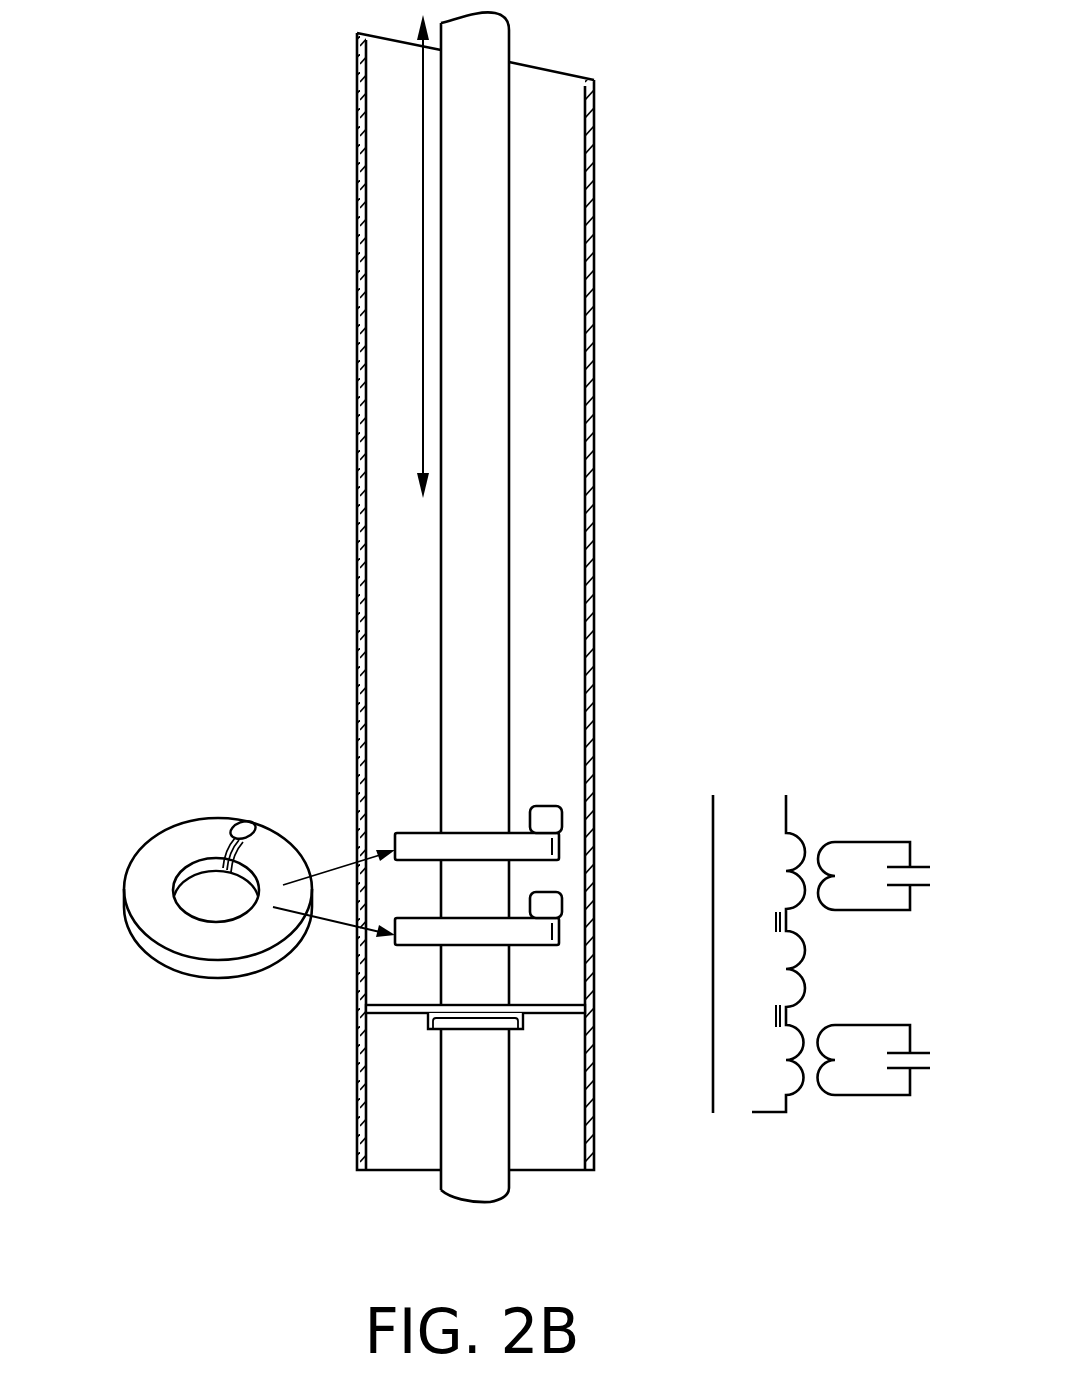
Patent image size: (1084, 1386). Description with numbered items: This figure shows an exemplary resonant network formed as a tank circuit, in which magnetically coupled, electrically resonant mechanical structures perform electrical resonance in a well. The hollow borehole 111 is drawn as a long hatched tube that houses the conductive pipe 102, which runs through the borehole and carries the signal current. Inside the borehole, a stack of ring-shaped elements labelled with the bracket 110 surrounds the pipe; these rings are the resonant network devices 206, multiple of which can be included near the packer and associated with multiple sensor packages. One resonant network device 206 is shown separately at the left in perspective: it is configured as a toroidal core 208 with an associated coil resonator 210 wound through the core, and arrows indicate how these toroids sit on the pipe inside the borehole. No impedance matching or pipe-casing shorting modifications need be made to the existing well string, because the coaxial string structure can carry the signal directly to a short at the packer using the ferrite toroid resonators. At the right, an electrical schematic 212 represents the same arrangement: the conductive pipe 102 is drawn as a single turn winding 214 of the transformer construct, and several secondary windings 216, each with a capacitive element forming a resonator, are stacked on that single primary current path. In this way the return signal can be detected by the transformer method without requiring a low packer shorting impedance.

The conductive pipe 102 is at (511, 43).
The hollow borehole 111 is at (594, 347).
The coil assembly 110 is at (625, 762).
The resonant network device 206 is at (174, 892).
The toroidal core 208 is at (188, 978).
The coil resonator 210 is at (250, 821).
The equivalent circuit 212 is at (834, 949).
The single turn winding 214 is at (773, 973).
The secondary windings 216 is at (826, 912).